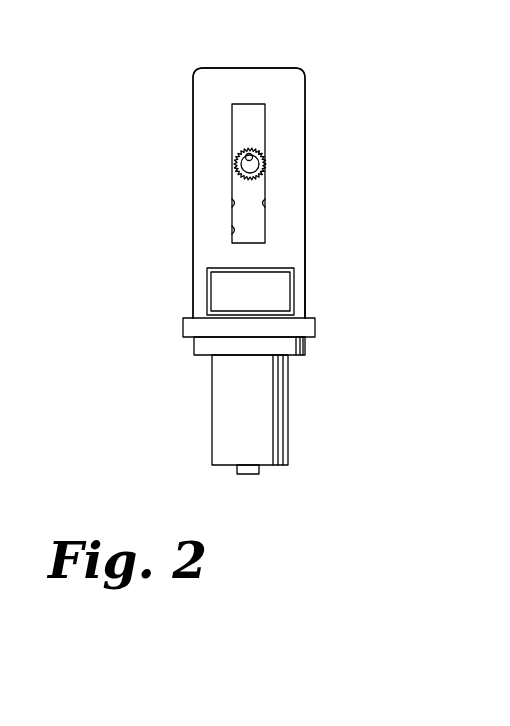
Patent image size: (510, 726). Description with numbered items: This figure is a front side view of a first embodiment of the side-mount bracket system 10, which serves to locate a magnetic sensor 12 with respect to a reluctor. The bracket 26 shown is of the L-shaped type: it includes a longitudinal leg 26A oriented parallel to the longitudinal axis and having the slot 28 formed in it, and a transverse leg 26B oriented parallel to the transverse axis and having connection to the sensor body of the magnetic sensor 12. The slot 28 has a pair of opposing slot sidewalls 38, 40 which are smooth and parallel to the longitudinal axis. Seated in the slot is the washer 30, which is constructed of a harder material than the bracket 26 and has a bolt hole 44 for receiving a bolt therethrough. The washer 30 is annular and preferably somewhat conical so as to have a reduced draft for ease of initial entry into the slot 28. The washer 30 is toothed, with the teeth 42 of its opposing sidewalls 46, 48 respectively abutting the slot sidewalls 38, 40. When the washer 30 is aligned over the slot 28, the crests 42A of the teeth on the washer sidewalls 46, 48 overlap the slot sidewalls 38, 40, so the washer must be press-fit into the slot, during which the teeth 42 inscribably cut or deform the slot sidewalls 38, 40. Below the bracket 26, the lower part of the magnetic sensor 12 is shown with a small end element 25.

The side-mount bracket system 10 is at (183, 93).
The magnetic sensor 12 is at (316, 348).
The connector tab 25 is at (250, 475).
The bracket 26 is at (306, 88).
The longitudinal leg 26A is at (306, 243).
The transverse leg 26B is at (316, 320).
The slot 28 is at (232, 231).
The washer 30 is at (240, 151).
The slot sidewall 38 is at (266, 207).
The slot sidewall 40 is at (232, 204).
The teeth 42 is at (240, 176).
The crests 42A is at (259, 156).
The bolt hole 44 is at (262, 151).
The washer sidewall 46 is at (264, 170).
The washer sidewall 48 is at (236, 176).